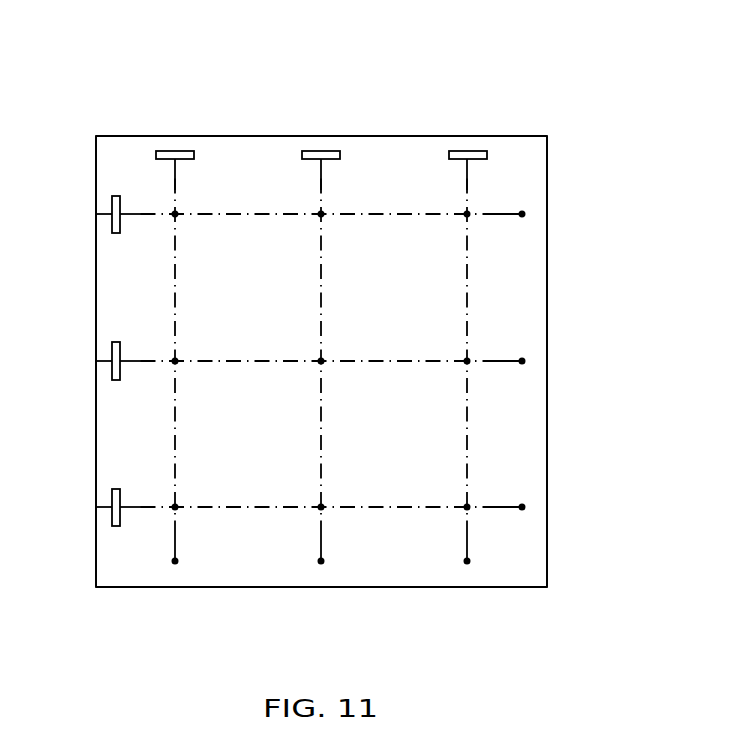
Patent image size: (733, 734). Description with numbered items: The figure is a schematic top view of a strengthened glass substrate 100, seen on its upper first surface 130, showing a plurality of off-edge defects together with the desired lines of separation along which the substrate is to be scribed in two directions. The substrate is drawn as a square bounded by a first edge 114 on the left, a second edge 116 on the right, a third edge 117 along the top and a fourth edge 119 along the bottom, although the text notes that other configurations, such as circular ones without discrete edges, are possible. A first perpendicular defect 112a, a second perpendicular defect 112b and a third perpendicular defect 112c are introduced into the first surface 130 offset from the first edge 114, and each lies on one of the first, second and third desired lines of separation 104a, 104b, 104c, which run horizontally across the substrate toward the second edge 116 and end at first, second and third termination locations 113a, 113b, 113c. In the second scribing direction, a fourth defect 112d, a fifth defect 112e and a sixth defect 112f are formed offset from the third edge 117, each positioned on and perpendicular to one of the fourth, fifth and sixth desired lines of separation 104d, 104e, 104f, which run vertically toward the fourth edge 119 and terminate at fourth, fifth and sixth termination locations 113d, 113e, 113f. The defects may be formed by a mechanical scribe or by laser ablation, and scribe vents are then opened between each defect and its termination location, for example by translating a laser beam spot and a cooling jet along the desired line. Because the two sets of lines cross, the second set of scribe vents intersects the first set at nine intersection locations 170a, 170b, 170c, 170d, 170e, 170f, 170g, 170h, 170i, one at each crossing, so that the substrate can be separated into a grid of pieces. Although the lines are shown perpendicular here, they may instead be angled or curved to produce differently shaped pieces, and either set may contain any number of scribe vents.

The strengthened glass substrate 100 is at (568, 102).
The first surface 130 is at (270, 447).
The first edge 114 is at (96, 165).
The second edge 116 is at (547, 554).
The third edge 117 is at (495, 136).
The fourth edge 119 is at (520, 587).
The first desired line of separation 104a is at (380, 213).
The second desired line of separation 104b is at (380, 359).
The third desired line of separation 104c is at (380, 505).
The fourth desired line of separation 104d is at (175, 262).
The fifth desired line of separation 104e is at (321, 293).
The sixth desired line of separation 104f is at (467, 267).
The first perpendicular defect 112a is at (96, 214).
The second perpendicular defect 112b is at (96, 361).
The third perpendicular defect 112c is at (96, 507).
The fourth defect 112d is at (176, 150).
The fifth defect 112e is at (322, 150).
The sixth defect 112f is at (469, 150).
The first termination location 113a is at (522, 214).
The second termination location 113b is at (522, 361).
The third termination location 113c is at (522, 507).
The fourth termination location 113d is at (175, 563).
The fifth termination location 113e is at (321, 563).
The sixth termination location 113f is at (467, 563).
The intersection location 170a is at (175, 214).
The intersection location 170b is at (321, 214).
The intersection location 170c is at (467, 214).
The intersection location 170d is at (175, 361).
The intersection location 170e is at (321, 361).
The intersection location 170f is at (467, 361).
The intersection location 170g is at (175, 507).
The intersection location 170h is at (321, 507).
The intersection location 170i is at (467, 507).